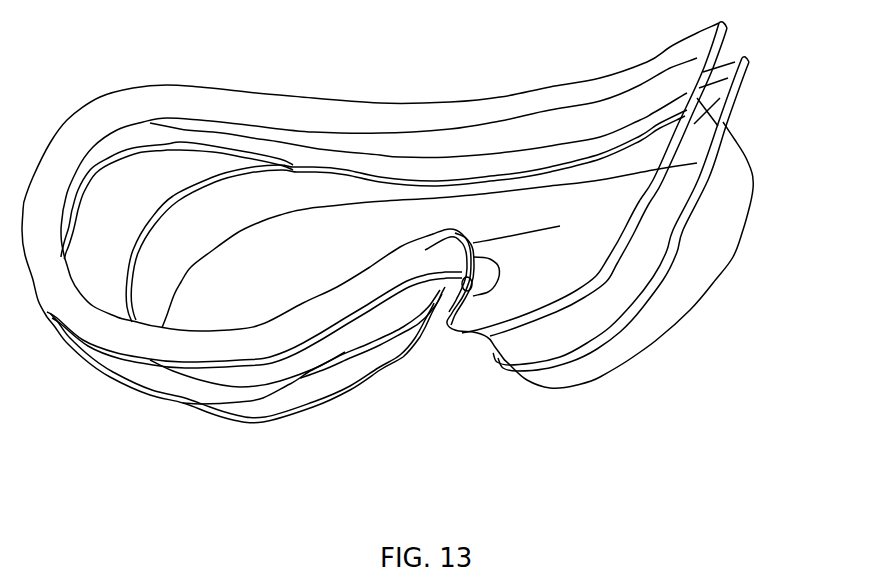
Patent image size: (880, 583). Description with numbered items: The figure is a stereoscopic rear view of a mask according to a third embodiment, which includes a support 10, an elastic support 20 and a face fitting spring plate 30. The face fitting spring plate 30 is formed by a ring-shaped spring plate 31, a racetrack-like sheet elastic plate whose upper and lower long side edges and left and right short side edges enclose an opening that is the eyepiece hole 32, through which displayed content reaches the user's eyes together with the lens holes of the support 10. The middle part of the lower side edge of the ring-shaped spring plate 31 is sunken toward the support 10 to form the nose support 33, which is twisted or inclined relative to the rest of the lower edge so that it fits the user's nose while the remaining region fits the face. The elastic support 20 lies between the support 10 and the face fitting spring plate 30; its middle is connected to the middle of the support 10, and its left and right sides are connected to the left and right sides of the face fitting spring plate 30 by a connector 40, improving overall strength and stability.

The support 10 is at (727, 195).
The elastic support 20 is at (685, 241).
The face fitting spring plate 30 is at (432, 309).
The ring-shaped spring plate 31 is at (120, 332).
The eyepiece hole 32 is at (250, 277).
The nose support 33 is at (445, 250).
The connector 40 is at (697, 118).